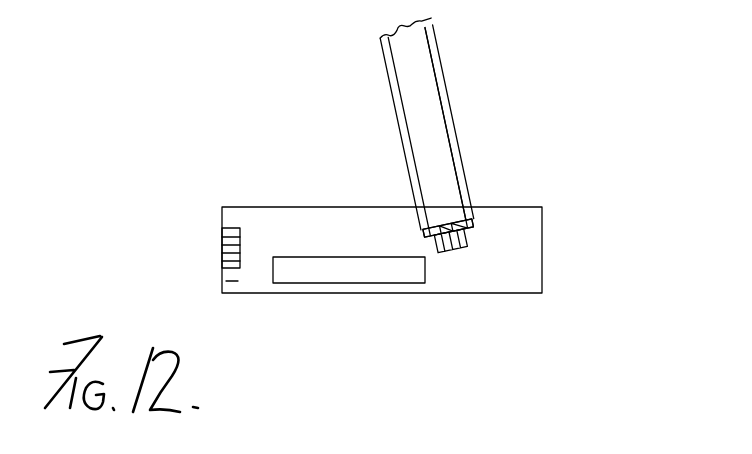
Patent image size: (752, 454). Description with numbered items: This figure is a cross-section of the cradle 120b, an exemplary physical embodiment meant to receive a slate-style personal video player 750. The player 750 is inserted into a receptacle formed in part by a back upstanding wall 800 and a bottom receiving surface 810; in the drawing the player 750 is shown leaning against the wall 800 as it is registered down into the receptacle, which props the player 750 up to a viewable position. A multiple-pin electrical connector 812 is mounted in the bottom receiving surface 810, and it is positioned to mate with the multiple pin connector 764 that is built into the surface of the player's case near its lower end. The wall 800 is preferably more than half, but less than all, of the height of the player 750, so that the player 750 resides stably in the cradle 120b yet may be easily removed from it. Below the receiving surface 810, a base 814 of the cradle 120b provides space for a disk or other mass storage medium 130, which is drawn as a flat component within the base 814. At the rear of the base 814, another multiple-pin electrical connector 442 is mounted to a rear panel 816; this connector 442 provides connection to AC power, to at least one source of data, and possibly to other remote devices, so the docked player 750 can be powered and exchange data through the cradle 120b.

The bottom receiving surface 810 is at (472, 228).
The mass storage medium 130 is at (355, 275).
The base 814 is at (357, 246).
The rear panel 816 is at (226, 295).
The multiple-pin electrical connector 442 is at (238, 252).
The back upstanding wall 800 is at (391, 81).
The portable player 750 is at (424, 58).
The multiple pin connector 764 is at (466, 218).
The multiple-pin electrical connector 812 is at (449, 253).
The cradle 120b is at (607, 240).